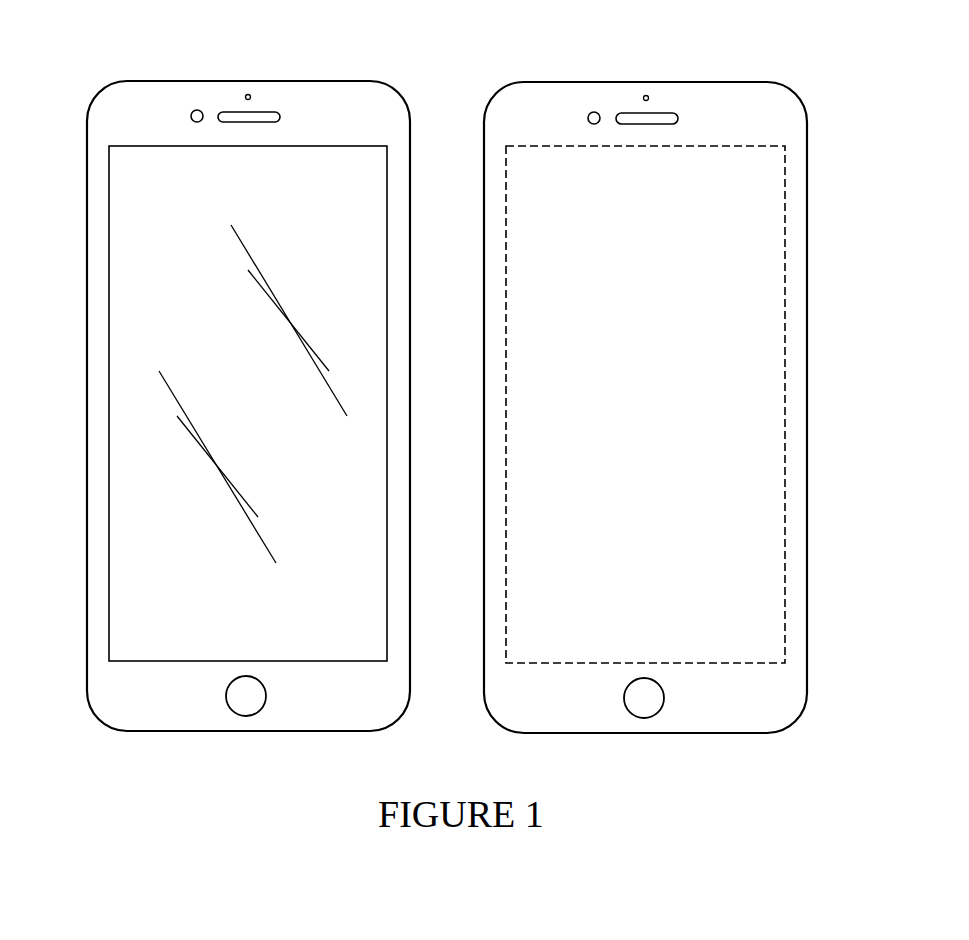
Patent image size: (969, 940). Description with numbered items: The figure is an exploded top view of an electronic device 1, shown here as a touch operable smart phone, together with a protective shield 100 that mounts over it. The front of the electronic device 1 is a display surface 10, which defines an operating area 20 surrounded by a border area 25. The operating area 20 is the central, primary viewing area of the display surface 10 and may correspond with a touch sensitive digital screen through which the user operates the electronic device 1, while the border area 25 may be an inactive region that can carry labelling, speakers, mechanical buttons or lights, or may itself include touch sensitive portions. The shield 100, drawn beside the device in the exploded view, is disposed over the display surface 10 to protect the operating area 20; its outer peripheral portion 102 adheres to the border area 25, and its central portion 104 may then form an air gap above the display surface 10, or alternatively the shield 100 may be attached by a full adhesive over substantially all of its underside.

The electronic device 1 is at (248, 81).
The display surface 10 is at (143, 278).
The operating area 20 is at (145, 538).
The border area 25 is at (113, 692).
The protective shield 100 is at (645, 82).
The outer peripheral portion 102 is at (785, 125).
The central portion 104 is at (750, 394).